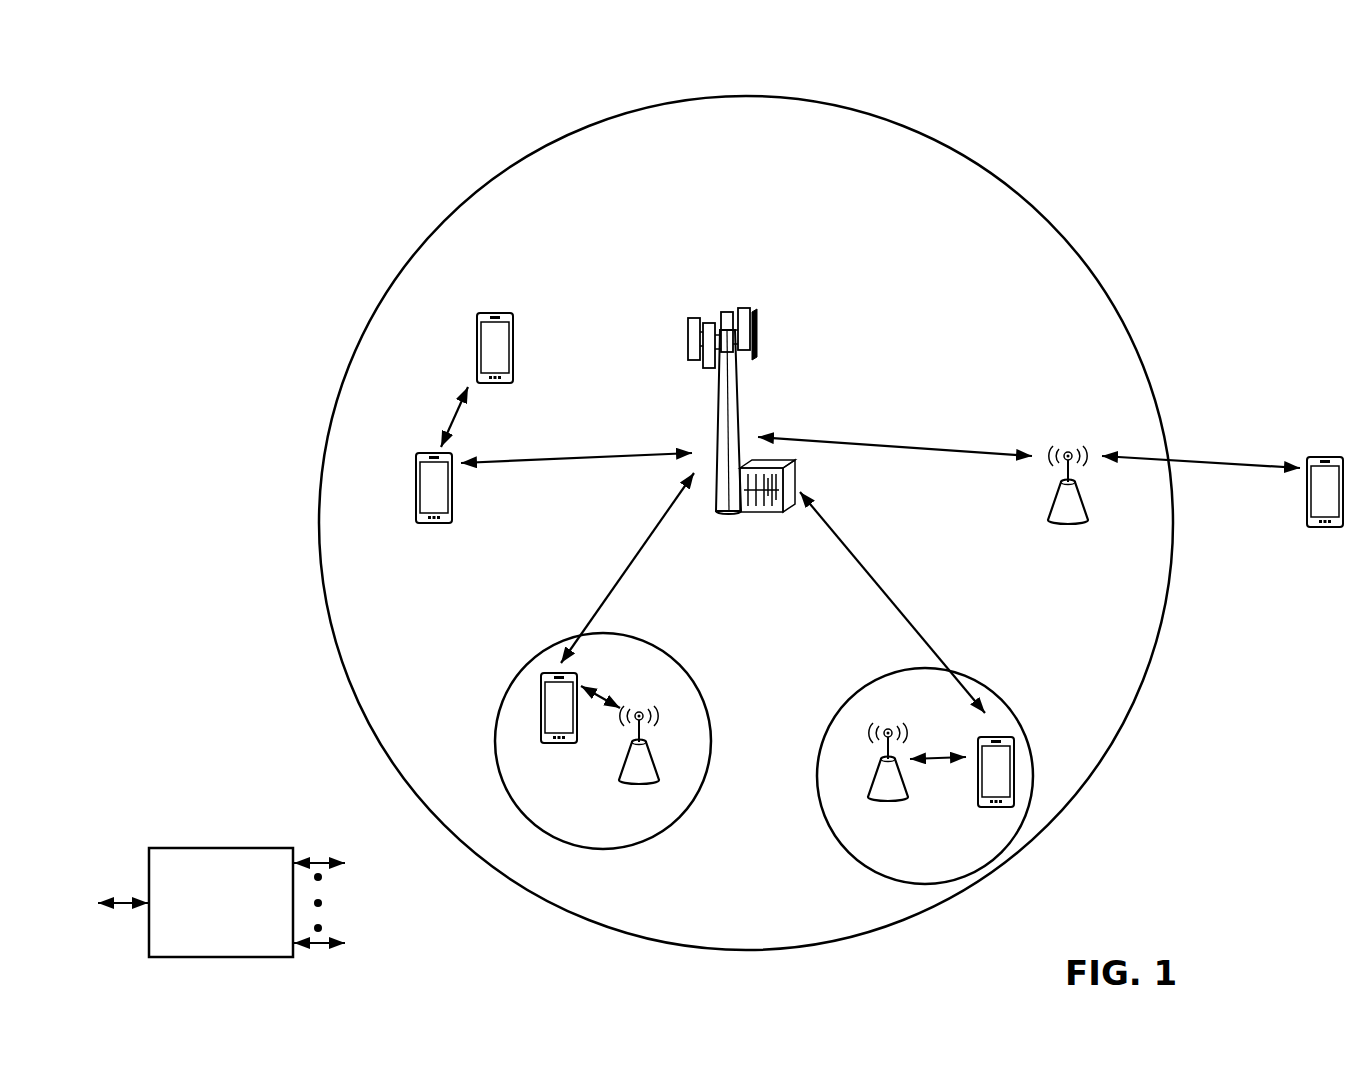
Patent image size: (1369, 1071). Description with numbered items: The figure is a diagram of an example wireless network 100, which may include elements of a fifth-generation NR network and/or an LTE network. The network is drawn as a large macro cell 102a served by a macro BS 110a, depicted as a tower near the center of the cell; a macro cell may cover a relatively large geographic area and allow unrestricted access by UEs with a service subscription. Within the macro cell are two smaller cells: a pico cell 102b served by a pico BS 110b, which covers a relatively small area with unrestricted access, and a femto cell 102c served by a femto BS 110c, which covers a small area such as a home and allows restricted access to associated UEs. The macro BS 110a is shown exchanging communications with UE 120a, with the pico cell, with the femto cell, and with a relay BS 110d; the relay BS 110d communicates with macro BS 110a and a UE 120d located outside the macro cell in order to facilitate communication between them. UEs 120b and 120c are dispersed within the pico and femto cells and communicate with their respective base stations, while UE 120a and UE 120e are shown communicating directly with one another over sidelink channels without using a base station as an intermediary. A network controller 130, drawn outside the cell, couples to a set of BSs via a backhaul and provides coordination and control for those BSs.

The wireless network 100 is at (140, 92).
The macro cell 102a is at (1031, 203).
The pico cell 102b is at (694, 682).
The femto cell 102c is at (862, 690).
The macro BS 110a is at (734, 300).
The pico BS 110b is at (660, 770).
The femto BS 110c is at (871, 791).
The relay BS 110d is at (1068, 444).
The UE 120a is at (416, 484).
The UE 120b is at (550, 743).
The UE 120c is at (983, 804).
The UE 120d is at (1338, 458).
The UE 120e is at (477, 336).
The network controller 130 is at (218, 847).